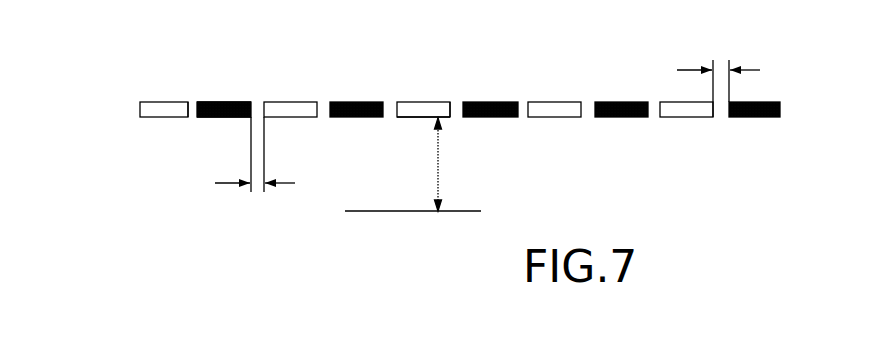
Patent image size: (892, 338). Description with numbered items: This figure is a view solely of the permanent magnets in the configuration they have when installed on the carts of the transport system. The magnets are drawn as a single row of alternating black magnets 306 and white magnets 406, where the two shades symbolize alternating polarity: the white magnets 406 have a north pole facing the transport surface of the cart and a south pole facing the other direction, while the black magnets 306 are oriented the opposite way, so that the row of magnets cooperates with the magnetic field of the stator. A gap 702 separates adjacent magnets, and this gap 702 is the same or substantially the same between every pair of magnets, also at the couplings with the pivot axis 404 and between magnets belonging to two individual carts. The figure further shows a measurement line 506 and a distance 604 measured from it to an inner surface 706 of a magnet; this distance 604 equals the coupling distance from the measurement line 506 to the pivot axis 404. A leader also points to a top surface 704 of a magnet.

The black magnets 306 is at (244, 101).
The white magnets 406 is at (299, 101).
The pivot axis 404 is at (189, 119).
The gap 702 is at (258, 197).
The top surface of segment 704 is at (233, 101).
The inner surface 706 is at (218, 118).
The distance 604 is at (438, 182).
The measurement line 506 is at (440, 211).